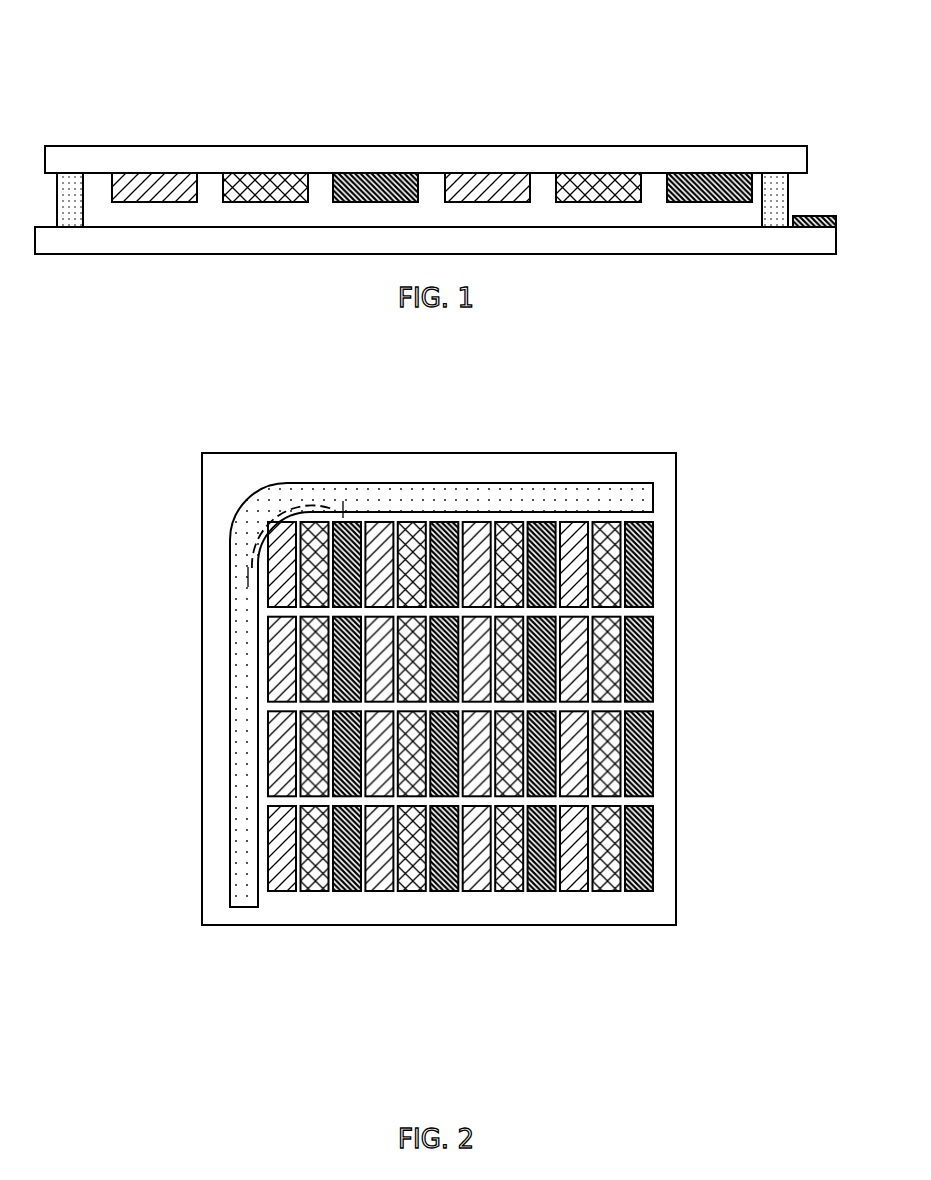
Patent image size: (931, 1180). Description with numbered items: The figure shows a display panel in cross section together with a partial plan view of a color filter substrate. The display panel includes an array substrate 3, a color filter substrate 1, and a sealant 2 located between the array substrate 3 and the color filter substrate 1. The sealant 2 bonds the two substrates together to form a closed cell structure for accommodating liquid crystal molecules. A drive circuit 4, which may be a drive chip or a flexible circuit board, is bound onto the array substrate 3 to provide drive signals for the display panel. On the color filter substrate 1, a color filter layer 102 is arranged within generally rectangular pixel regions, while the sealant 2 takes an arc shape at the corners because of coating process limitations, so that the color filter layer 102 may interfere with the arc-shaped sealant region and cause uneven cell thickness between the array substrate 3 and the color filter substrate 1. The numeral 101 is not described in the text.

In FIG. 1, the color filter substrate 1 is at (596, 45).
In FIG. 1, the cover plate / first substrate 101 is at (397, 151).
In FIG. 2, the cover plate / first substrate 101 is at (619, 925).
In FIG. 1, the color filter layer 102 is at (712, 92).
In FIG. 2, the color filter layer 102 is at (413, 1024).
In FIG. 1, the sealant 2 is at (70, 210).
In FIG. 2, the sealant 2 is at (481, 495).
In FIG. 1, the array substrate 3 is at (151, 248).
In FIG. 1, the drive circuit 4 is at (823, 216).